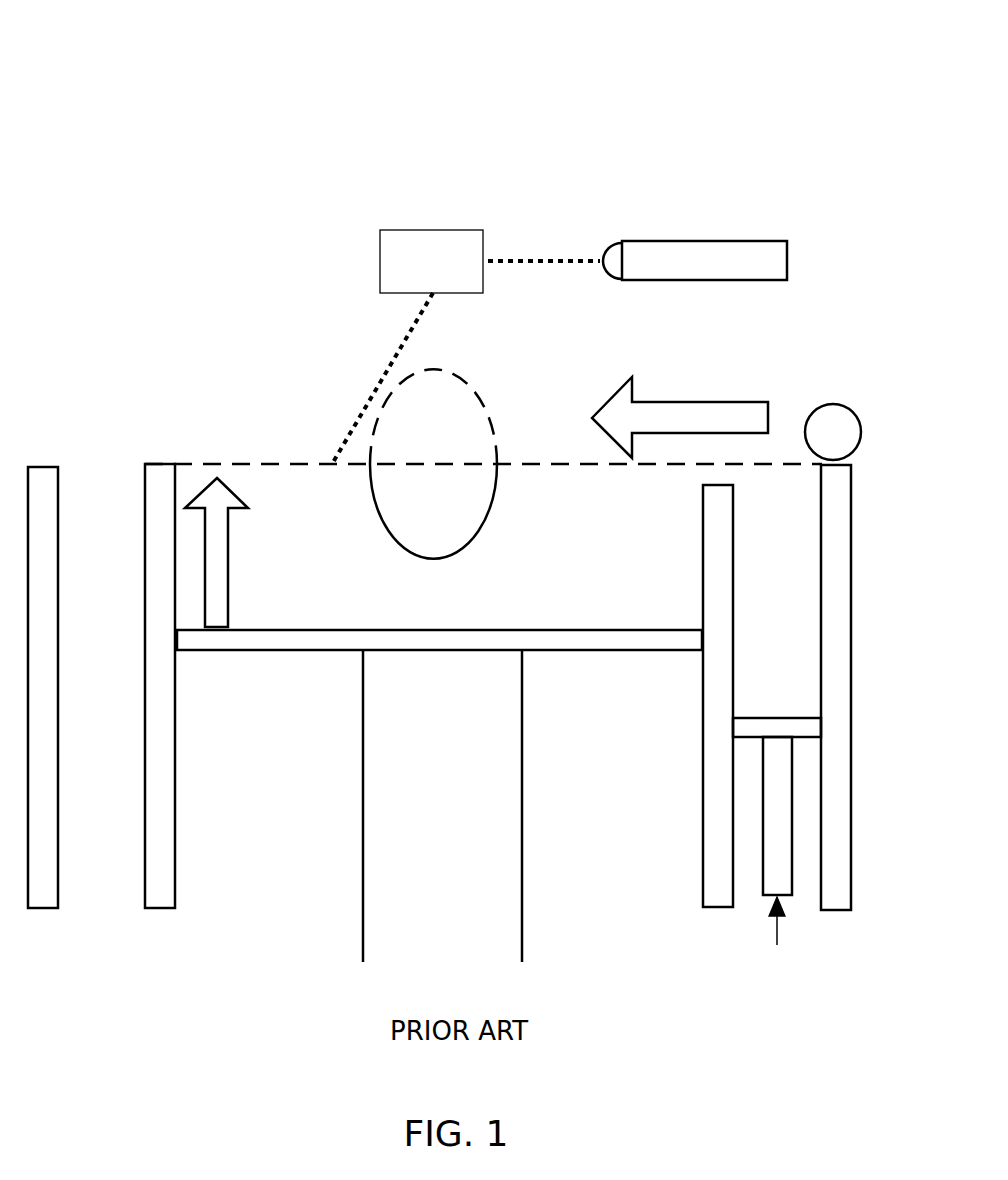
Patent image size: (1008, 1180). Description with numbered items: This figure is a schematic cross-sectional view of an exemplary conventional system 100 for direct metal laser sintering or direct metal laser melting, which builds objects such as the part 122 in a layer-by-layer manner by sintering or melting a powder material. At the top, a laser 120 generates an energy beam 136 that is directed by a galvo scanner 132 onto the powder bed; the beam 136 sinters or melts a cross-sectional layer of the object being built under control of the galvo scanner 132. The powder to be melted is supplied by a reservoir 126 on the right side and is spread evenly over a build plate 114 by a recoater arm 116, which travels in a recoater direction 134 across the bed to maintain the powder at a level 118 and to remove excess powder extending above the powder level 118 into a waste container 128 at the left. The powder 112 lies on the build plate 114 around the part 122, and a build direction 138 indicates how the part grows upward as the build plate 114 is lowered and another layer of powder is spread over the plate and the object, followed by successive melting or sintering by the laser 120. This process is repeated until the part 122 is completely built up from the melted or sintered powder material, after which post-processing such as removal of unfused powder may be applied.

The system 100 is at (250, 45).
The powder 112 is at (585, 525).
The build plate 114 is at (648, 630).
The recoater arm 116 is at (833, 404).
The powder level 118 is at (240, 464).
The laser 120 is at (650, 241).
The part 122 is at (370, 520).
The reservoir 126 is at (783, 566).
The waste container 128 is at (127, 800).
The galvo scanner 132 is at (433, 230).
The recoater direction 134 is at (615, 395).
The energy beam 136 is at (383, 375).
The build direction 138 is at (203, 493).